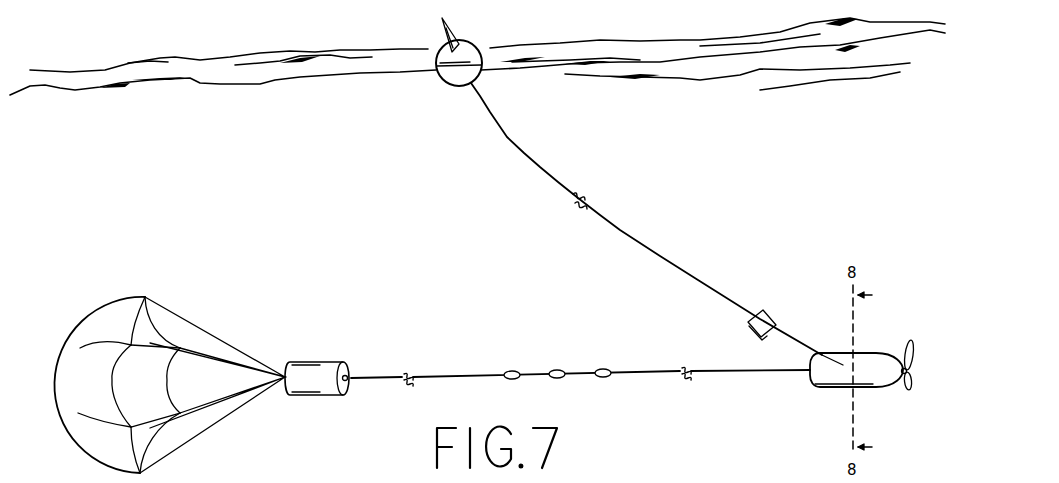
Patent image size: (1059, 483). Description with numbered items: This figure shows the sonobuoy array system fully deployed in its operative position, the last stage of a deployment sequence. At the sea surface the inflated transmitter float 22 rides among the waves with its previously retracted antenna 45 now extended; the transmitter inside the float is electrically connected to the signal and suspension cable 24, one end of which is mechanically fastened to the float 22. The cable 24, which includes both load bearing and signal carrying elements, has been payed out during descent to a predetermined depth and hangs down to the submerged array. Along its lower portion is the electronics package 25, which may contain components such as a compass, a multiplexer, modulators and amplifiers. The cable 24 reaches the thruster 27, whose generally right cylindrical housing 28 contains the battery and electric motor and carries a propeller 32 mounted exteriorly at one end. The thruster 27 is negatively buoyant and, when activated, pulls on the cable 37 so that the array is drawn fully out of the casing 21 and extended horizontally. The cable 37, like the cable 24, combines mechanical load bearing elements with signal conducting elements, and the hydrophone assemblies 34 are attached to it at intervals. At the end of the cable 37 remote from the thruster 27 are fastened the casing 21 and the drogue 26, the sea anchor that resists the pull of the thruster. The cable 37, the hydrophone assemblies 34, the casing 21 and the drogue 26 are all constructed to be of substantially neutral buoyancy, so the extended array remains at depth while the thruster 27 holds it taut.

The casing 21 is at (337, 357).
The transmitter float 22 is at (478, 44).
The signal and suspension cable 24 is at (604, 218).
The electronics package 25 is at (754, 340).
The drogue 26 is at (139, 295).
The thruster 27 is at (861, 351).
The housing 28 is at (814, 392).
The propeller 32 is at (911, 348).
The hydrophone assemblies 34 is at (596, 364).
The cable 37 is at (580, 378).
The antenna 45 is at (449, 22).